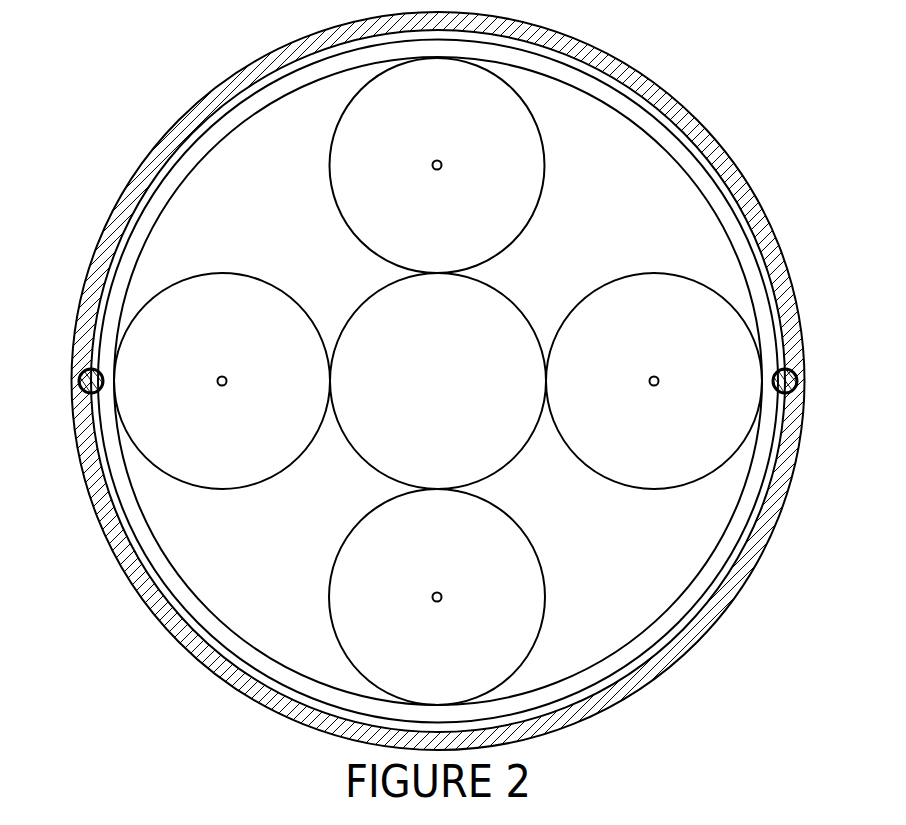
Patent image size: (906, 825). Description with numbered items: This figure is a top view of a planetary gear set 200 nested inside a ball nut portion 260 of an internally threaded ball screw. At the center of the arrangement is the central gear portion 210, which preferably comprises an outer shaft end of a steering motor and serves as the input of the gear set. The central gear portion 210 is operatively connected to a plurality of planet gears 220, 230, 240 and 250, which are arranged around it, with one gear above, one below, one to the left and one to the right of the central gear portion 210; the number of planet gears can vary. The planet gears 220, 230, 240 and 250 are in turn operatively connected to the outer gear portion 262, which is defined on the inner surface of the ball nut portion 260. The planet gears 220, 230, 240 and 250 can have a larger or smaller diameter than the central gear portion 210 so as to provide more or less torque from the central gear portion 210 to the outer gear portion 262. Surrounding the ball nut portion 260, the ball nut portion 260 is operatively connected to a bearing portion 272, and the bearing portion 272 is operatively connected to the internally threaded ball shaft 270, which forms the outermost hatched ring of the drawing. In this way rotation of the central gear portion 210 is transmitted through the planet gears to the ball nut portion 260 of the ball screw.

The planetary gear set 200 is at (76, 58).
The central gear portion 210 is at (512, 300).
The planet gear 220 is at (545, 140).
The planet gear 230 is at (722, 298).
The planet gear 240 is at (544, 620).
The planet gear 250 is at (185, 483).
The ball nut portion 260 is at (133, 263).
The outer gear portion 262 is at (160, 220).
The internally threaded ball shaft 270 is at (803, 420).
The bearing portion 272 is at (82, 370).